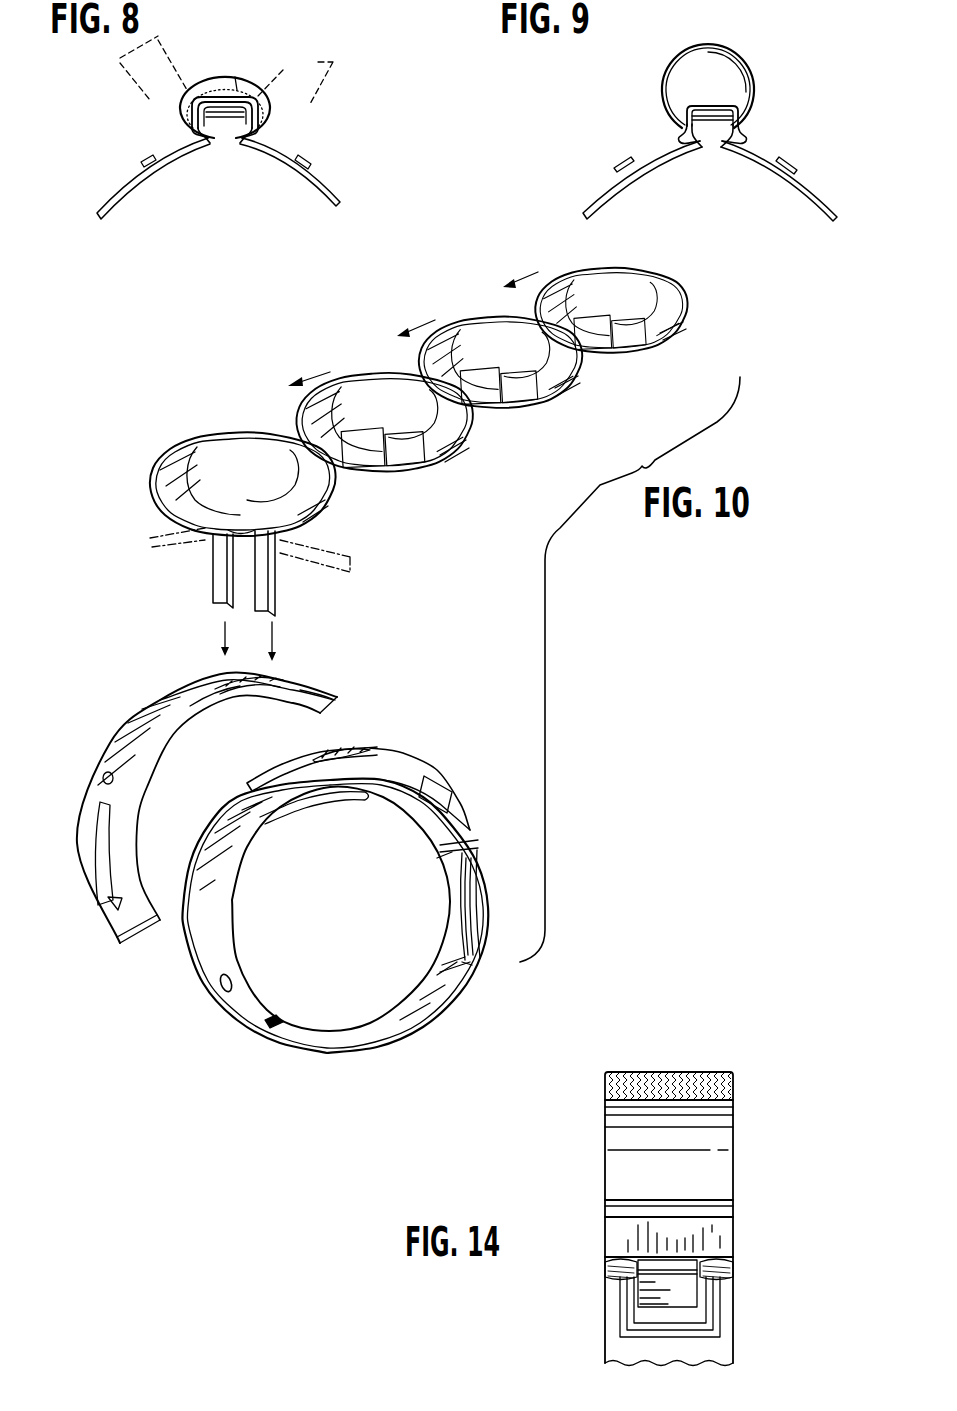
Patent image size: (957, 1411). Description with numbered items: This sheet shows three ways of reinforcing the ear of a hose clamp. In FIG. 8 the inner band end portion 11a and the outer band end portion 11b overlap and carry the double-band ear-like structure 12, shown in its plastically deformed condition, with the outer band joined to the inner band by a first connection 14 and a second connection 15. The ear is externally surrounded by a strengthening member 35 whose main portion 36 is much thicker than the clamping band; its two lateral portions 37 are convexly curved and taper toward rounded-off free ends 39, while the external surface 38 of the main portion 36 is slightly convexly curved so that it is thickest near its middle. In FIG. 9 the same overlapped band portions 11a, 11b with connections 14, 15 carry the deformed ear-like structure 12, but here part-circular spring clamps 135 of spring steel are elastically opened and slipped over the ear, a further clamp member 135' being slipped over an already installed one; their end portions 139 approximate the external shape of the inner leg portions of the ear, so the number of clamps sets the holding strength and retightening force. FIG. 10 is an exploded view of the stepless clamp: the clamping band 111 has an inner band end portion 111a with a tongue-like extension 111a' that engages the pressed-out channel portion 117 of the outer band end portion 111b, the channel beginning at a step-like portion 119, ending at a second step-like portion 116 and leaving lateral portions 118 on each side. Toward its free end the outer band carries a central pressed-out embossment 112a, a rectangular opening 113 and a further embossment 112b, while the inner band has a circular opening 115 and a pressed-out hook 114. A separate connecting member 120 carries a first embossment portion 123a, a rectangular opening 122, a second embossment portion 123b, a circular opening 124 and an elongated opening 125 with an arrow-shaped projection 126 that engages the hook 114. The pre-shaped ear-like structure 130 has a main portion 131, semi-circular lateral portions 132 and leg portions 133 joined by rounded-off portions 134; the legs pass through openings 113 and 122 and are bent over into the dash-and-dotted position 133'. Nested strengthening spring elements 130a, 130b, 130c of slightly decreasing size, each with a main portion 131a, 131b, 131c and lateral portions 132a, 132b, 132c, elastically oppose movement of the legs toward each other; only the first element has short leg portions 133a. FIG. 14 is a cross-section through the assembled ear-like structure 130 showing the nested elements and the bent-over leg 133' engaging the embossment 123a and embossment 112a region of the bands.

In FIG. 8, the inner band end portion 11a is at (166, 163).
In FIG. 9, the inner band end portion 11a is at (634, 173).
In FIG. 8, the outer band end portion 11b is at (276, 147).
In FIG. 9, the outer band end portion 11b is at (757, 150).
In FIG. 8, the ear-like structure 12 is at (244, 99).
In FIG. 9, the ear-like structure 12 is at (726, 100).
In FIG. 8, the first connection 14 is at (146, 154).
In FIG. 9, the first connection 14 is at (617, 157).
In FIG. 8, the second connection 15 is at (310, 164).
In FIG. 9, the second connection 15 is at (800, 161).
In FIG. 8, the strengthening member 35 is at (195, 82).
In FIG. 8, the main portion 36 is at (224, 80).
In FIG. 8, the lateral portions 37 is at (180, 110).
In FIG. 8, the external surface 38 is at (235, 75).
In FIG. 8, the free ends 39 is at (212, 139).
In FIG. 9, the spring clamps 135 is at (708, 66).
In FIG. 9, the inner ring wall 135' is at (731, 70).
In FIG. 9, the end portion 139 is at (687, 139).
In FIG. 10, the clamping band 111 is at (346, 908).
In FIG. 10, the inner band end portion 111a is at (218, 843).
In FIG. 10, the tongue-like extension 111a' is at (314, 827).
In FIG. 10, the outer band end portion 111b is at (450, 796).
In FIG. 10, the first flap 112a is at (430, 775).
In FIG. 10, the central pressed-out embossment 112b is at (280, 762).
In FIG. 10, the rectangular opening 113 is at (370, 748).
In FIG. 10, the pressed-out hook 114 is at (277, 1020).
In FIG. 10, the circular opening 115 is at (233, 980).
In FIG. 10, the second step-like portion 116 is at (470, 960).
In FIG. 10, the pressed-out channel portion 117 is at (476, 892).
In FIG. 10, the lateral portions 118 is at (455, 908).
In FIG. 10, the step-like portion 119 is at (437, 863).
In FIG. 10, the connecting member 120 is at (216, 794).
In FIG. 10, the rectangular opening 122 is at (277, 676).
In FIG. 10, the first central pressed-out embossment portion 123a is at (330, 688).
In FIG. 14, the first central pressed-out embossment portion 123a is at (630, 1257).
In FIG. 10, the central pressed-out embossment portion 123b is at (217, 683).
In FIG. 10, the circular opening 124 is at (102, 777).
In FIG. 10, the elongated opening 125 is at (100, 857).
In FIG. 10, the notch 126 is at (118, 902).
In FIG. 10, the ear-like structure 130 is at (229, 524).
In FIG. 14, the ear-like structure 130 is at (674, 1187).
In FIG. 10, the strengthening spring element 130a is at (419, 422).
In FIG. 10, the strengthening spring element 130b is at (523, 357).
In FIG. 10, the strengthening spring element 130c is at (627, 294).
In FIG. 10, the main portion 131 is at (273, 443).
In FIG. 14, the main portion 131 is at (648, 1068).
In FIG. 14, the main portion 131a is at (730, 1080).
In FIG. 14, the main portion 131b is at (617, 1085).
In FIG. 14, the main portion 131c is at (737, 1115).
In FIG. 10, the lateral portions 132 is at (147, 485).
In FIG. 10, the lateral portions 132a is at (327, 385).
In FIG. 10, the lateral portions 132b is at (432, 335).
In FIG. 10, the lateral portions 132c is at (553, 292).
In FIG. 10, the leg portions 133 is at (244, 577).
In FIG. 14, the short leg portions 133a is at (720, 1238).
In FIG. 14, the bent leg 133' is at (710, 1298).
In FIG. 10, the rounded-off portions 134 is at (262, 518).